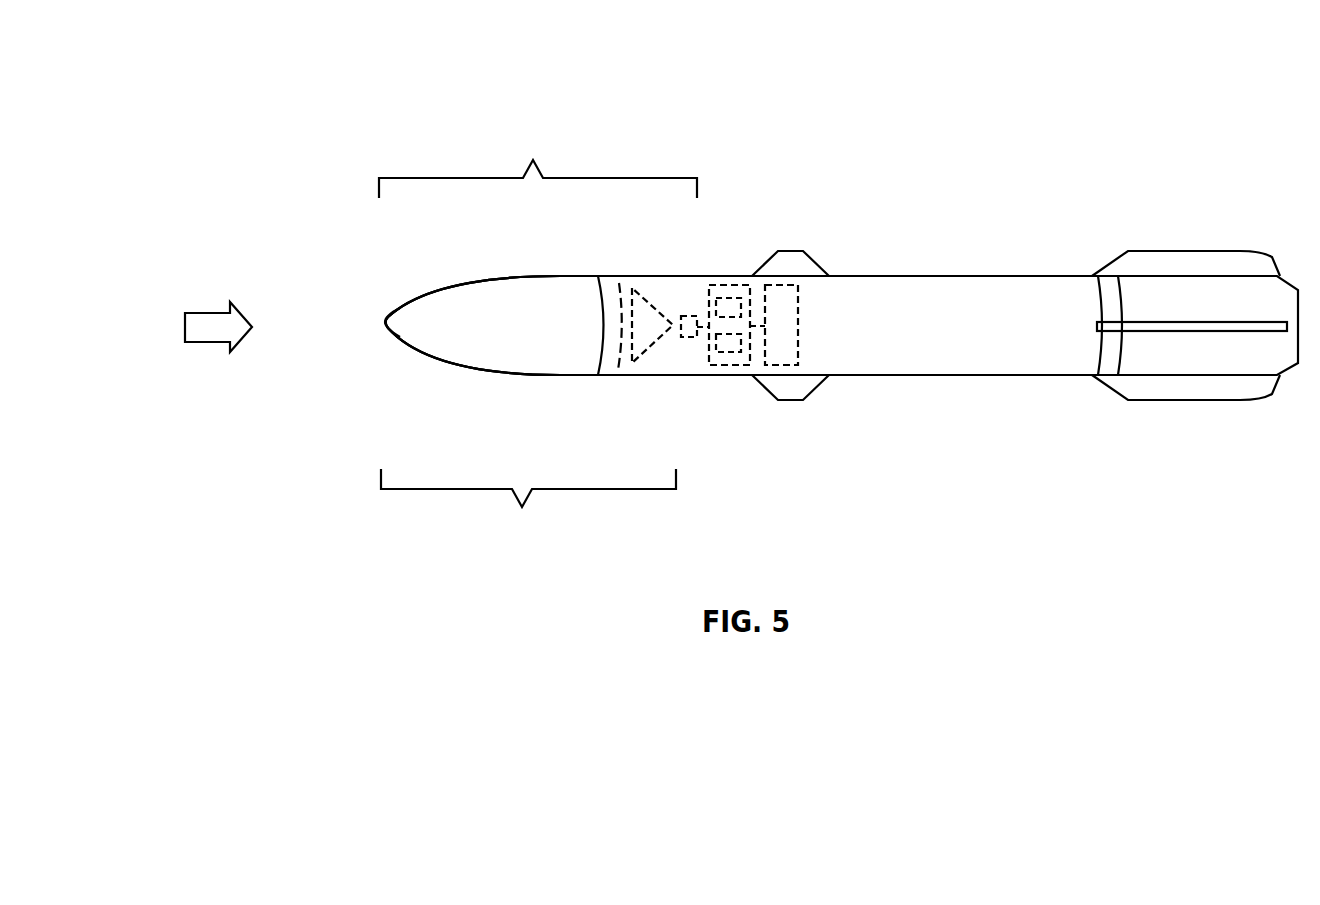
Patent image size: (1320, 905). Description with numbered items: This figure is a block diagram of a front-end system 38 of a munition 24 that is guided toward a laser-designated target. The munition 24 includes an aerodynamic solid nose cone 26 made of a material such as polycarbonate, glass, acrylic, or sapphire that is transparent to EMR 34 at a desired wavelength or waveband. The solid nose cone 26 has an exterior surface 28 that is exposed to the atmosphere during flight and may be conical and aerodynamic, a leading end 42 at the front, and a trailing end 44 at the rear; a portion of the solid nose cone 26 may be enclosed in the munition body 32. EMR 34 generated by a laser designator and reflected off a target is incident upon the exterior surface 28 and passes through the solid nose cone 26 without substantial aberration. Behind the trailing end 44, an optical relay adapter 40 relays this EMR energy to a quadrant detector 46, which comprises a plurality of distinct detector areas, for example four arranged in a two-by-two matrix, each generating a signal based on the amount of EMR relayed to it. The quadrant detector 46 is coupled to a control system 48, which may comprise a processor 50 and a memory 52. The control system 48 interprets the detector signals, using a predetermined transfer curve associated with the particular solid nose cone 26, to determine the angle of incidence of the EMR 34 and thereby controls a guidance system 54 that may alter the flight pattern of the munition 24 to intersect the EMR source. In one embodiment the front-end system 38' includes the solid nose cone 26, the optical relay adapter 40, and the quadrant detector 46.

The munition 24 is at (973, 60).
The solid nose cone 26 is at (551, 335).
The exterior surface 28 is at (452, 280).
The munition body 32 is at (972, 276).
The EMR 34 is at (207, 311).
The front-end system 38 is at (528, 504).
The front-end system 38' is at (538, 161).
The optical relay adapter 40 is at (647, 327).
The leading end 42 is at (386, 322).
The trailing end 44 is at (621, 276).
The quadrant detector 46 is at (690, 337).
The control system 48 is at (715, 365).
The processor 50 is at (733, 302).
The memory 52 is at (732, 353).
The guidance system 54 is at (798, 340).